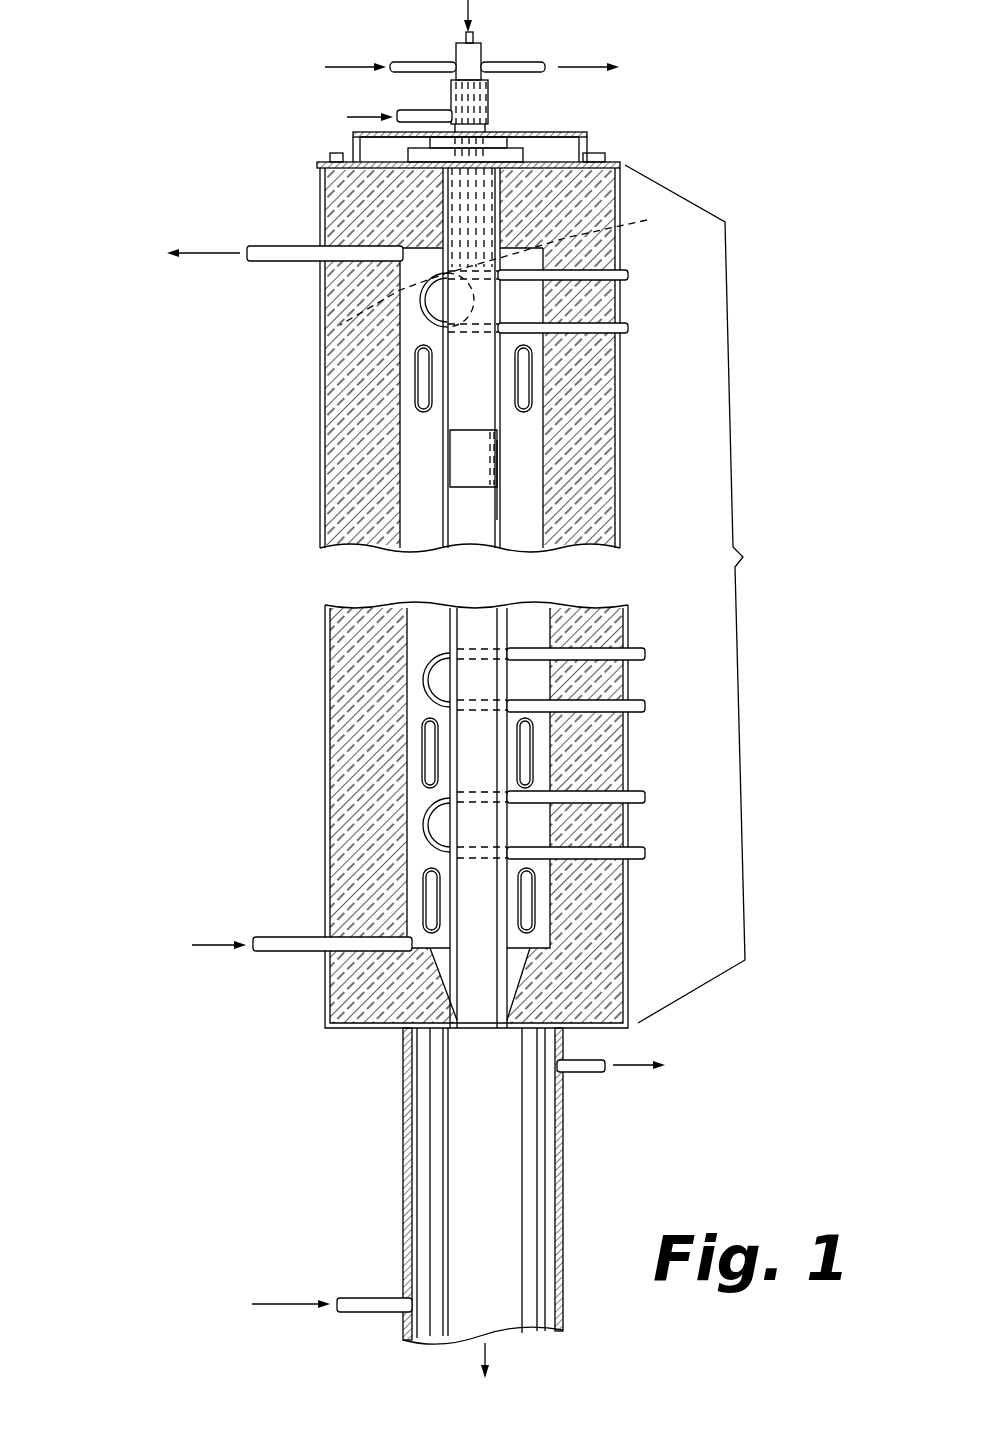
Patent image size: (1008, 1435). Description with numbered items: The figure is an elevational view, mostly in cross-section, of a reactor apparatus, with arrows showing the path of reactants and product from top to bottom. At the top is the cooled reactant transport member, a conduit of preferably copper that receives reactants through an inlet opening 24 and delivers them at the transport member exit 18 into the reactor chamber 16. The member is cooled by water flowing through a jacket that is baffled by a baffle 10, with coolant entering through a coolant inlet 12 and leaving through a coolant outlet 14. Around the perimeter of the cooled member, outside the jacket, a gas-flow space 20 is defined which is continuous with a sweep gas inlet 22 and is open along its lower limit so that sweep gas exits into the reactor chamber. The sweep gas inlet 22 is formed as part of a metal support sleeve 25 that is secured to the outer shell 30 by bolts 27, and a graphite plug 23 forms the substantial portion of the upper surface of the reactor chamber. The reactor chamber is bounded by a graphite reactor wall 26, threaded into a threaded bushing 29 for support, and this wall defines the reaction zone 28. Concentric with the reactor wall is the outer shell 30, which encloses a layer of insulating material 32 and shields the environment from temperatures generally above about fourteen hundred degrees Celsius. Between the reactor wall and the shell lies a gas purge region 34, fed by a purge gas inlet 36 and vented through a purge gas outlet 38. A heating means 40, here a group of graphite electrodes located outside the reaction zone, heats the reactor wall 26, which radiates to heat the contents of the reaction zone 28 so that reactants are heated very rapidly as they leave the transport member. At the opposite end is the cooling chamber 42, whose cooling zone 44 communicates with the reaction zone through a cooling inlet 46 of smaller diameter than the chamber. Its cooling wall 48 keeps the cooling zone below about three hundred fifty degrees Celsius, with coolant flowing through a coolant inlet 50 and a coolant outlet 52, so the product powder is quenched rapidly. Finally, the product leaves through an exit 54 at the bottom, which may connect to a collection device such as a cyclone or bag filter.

The baffle 10 is at (545, 96).
The coolant inlet 12 is at (420, 67).
The coolant outlet 14 is at (535, 62).
The reactor chamber 16 is at (513, 456).
The transport member exit 18 is at (515, 261).
The gas-flow space 20 is at (312, 296).
The sweep gas inlet 22 is at (417, 112).
The plug 23 is at (490, 146).
The inlet opening 24 is at (472, 37).
The metal support sleeve 25 is at (582, 136).
The reactor wall 26 is at (505, 468).
The bolts 27 is at (327, 154).
The reaction zone 28 is at (475, 473).
The threaded bushing 29 is at (355, 155).
The outer shell 30 is at (322, 436).
The insulating material 32 is at (620, 447).
The gas purge region 34 is at (418, 330).
The purge gas inlet 36 is at (290, 951).
The purge gas outlet 38 is at (268, 248).
The heating means 40 is at (626, 326).
The cooling chamber 42 is at (403, 1107).
The cooling zone 44 is at (443, 1162).
The cooling inlet 46 is at (478, 1028).
The cooling wall 48 is at (563, 1173).
The coolant inlet 50 is at (360, 1313).
The coolant outlet 52 is at (585, 1073).
The exit 54 is at (495, 1352).